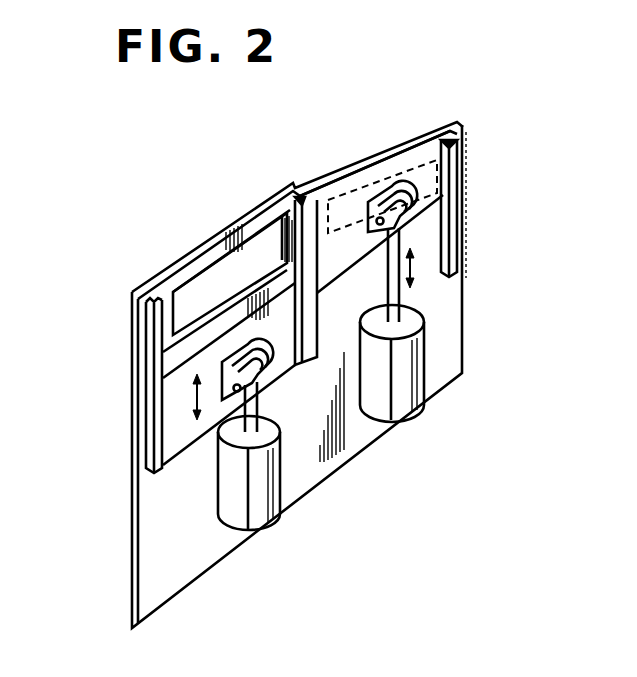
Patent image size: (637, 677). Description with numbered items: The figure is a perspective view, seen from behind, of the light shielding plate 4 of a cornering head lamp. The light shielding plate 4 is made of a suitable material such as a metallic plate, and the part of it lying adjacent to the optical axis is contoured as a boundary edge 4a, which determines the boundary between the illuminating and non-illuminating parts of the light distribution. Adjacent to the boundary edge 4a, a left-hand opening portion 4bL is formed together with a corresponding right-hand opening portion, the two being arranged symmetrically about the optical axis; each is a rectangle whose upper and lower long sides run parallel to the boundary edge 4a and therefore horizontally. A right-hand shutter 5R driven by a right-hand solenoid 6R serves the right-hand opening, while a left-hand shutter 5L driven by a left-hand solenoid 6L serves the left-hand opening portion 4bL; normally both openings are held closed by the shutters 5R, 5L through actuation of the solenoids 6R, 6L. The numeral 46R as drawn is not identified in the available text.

The light shielding plate 4 is at (445, 327).
The boundary edge 4a is at (270, 195).
The left-hand opening portion 4bL is at (204, 276).
The right window opening 46R is at (427, 132).
The left-hand shutter 5L is at (176, 418).
The right-hand shutter 5R is at (346, 212).
The left-hand solenoid 6L is at (262, 503).
The right-hand solenoid 6R is at (425, 405).